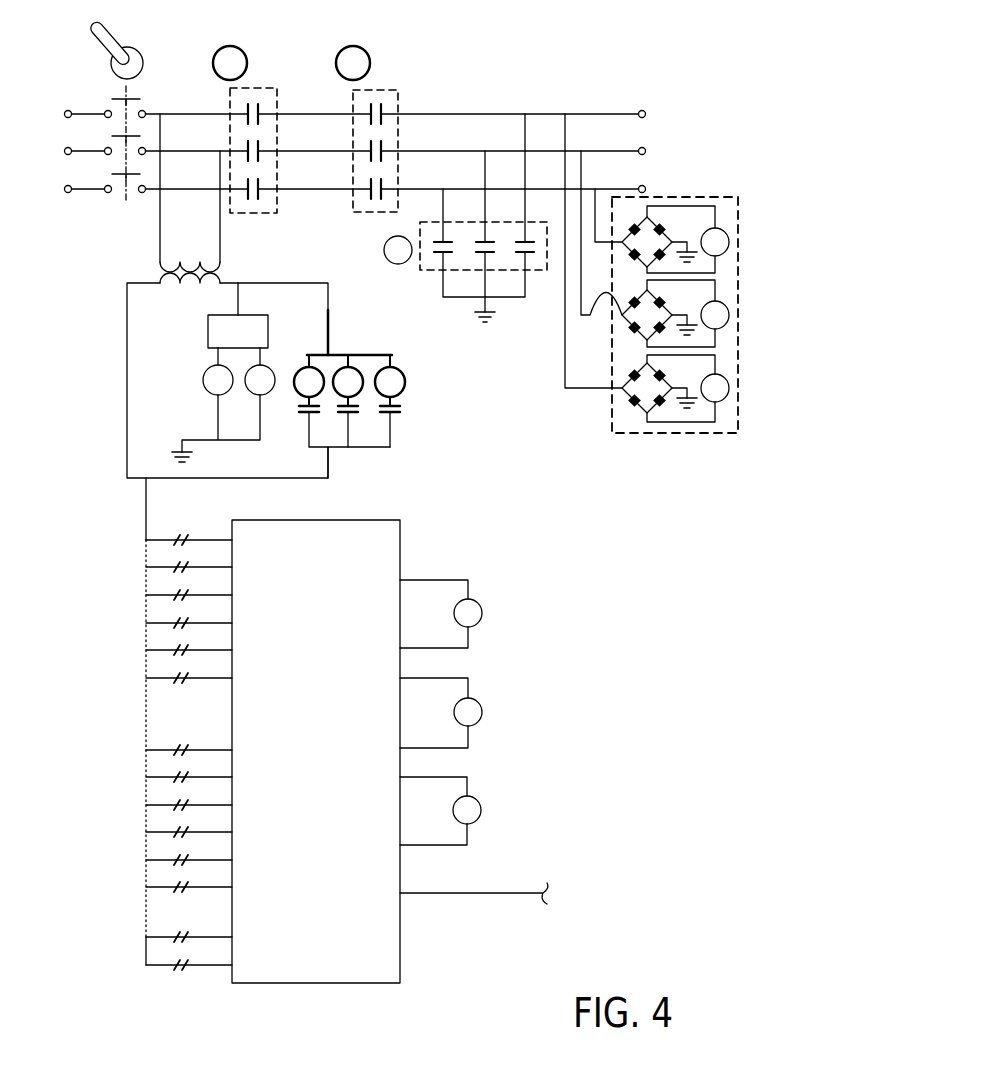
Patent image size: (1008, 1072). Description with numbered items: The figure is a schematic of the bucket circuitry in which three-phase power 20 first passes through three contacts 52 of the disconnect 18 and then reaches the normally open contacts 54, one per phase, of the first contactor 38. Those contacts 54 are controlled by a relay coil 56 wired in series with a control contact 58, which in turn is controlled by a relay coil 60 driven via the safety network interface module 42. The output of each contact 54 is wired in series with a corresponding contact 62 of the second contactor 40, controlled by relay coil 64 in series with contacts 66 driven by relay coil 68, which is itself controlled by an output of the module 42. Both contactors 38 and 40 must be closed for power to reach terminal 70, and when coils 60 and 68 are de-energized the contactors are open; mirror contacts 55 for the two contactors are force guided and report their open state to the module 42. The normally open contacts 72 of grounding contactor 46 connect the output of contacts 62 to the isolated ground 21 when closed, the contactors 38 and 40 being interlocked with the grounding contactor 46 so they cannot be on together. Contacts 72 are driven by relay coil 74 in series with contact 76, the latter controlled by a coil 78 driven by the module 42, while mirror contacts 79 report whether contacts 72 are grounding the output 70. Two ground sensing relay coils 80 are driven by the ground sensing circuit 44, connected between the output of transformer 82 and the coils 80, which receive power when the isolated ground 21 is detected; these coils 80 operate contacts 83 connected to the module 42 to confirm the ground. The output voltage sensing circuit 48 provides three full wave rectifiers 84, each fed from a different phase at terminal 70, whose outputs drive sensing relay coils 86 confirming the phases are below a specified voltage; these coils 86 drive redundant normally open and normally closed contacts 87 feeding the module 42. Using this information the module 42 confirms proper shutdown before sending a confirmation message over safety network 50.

The disconnect 18 is at (96, 42).
The three-phase power 20 is at (57, 104).
The contacts of the disconnect 52 is at (113, 213).
The first contactor 38 is at (278, 100).
The normally open contacts 54 is at (247, 147).
The second contactor 40 is at (362, 212).
The contact of the second contactor 62 is at (386, 147).
The terminal 70 is at (661, 105).
The transformer 82 is at (231, 266).
The ground sensing circuit 44 is at (227, 380).
The ground sensing relay coils 80 is at (203, 375).
The relay coil 56 is at (300, 366).
The relay coil 64 is at (360, 355).
The relay coil 74 is at (406, 381).
The control contact 58 is at (305, 421).
The contacts 66 is at (352, 421).
The contact 76 is at (396, 421).
The grounding contactor 46 is at (429, 272).
The normally open contacts 72 is at (527, 256).
The isolated ground 21 is at (481, 313).
The full wave rectifiers 84 is at (668, 221).
The sensing relay coils 86 is at (730, 242).
The output voltage sensing circuit 48 is at (628, 443).
The safety network interface module 42 is at (273, 730).
The mirror contacts 55 is at (129, 537).
The mirror contacts 79 is at (129, 645).
The normally open and normally closed contacts 87 is at (129, 754).
The contacts 83 is at (129, 940).
The relay coil 60 is at (480, 600).
The relay coil 68 is at (480, 700).
The coil 78 is at (479, 798).
The safety network 50 is at (480, 893).